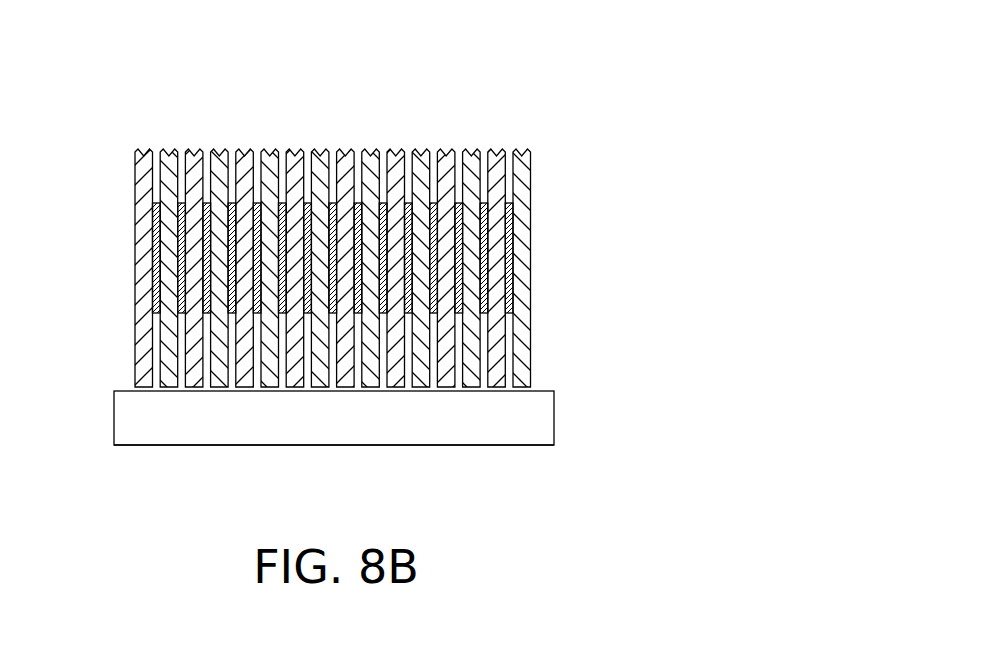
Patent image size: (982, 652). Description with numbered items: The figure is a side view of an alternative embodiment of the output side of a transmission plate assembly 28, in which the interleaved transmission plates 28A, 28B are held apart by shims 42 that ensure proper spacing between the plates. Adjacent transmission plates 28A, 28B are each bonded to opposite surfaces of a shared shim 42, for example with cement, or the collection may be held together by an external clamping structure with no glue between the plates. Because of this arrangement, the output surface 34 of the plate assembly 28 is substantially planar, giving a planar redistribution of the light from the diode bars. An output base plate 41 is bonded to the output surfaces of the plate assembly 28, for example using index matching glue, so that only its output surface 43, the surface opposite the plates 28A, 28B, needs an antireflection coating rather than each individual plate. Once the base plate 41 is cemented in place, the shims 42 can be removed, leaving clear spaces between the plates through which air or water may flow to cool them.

The transmission plate assembly 28 is at (547, 248).
The transmission plate 28A is at (143, 149).
The transmission plate 28B is at (168, 148).
The output surface 34 is at (548, 364).
The output base plate 41 is at (167, 432).
The shim 42 is at (308, 203).
The output surface 43 is at (227, 447).